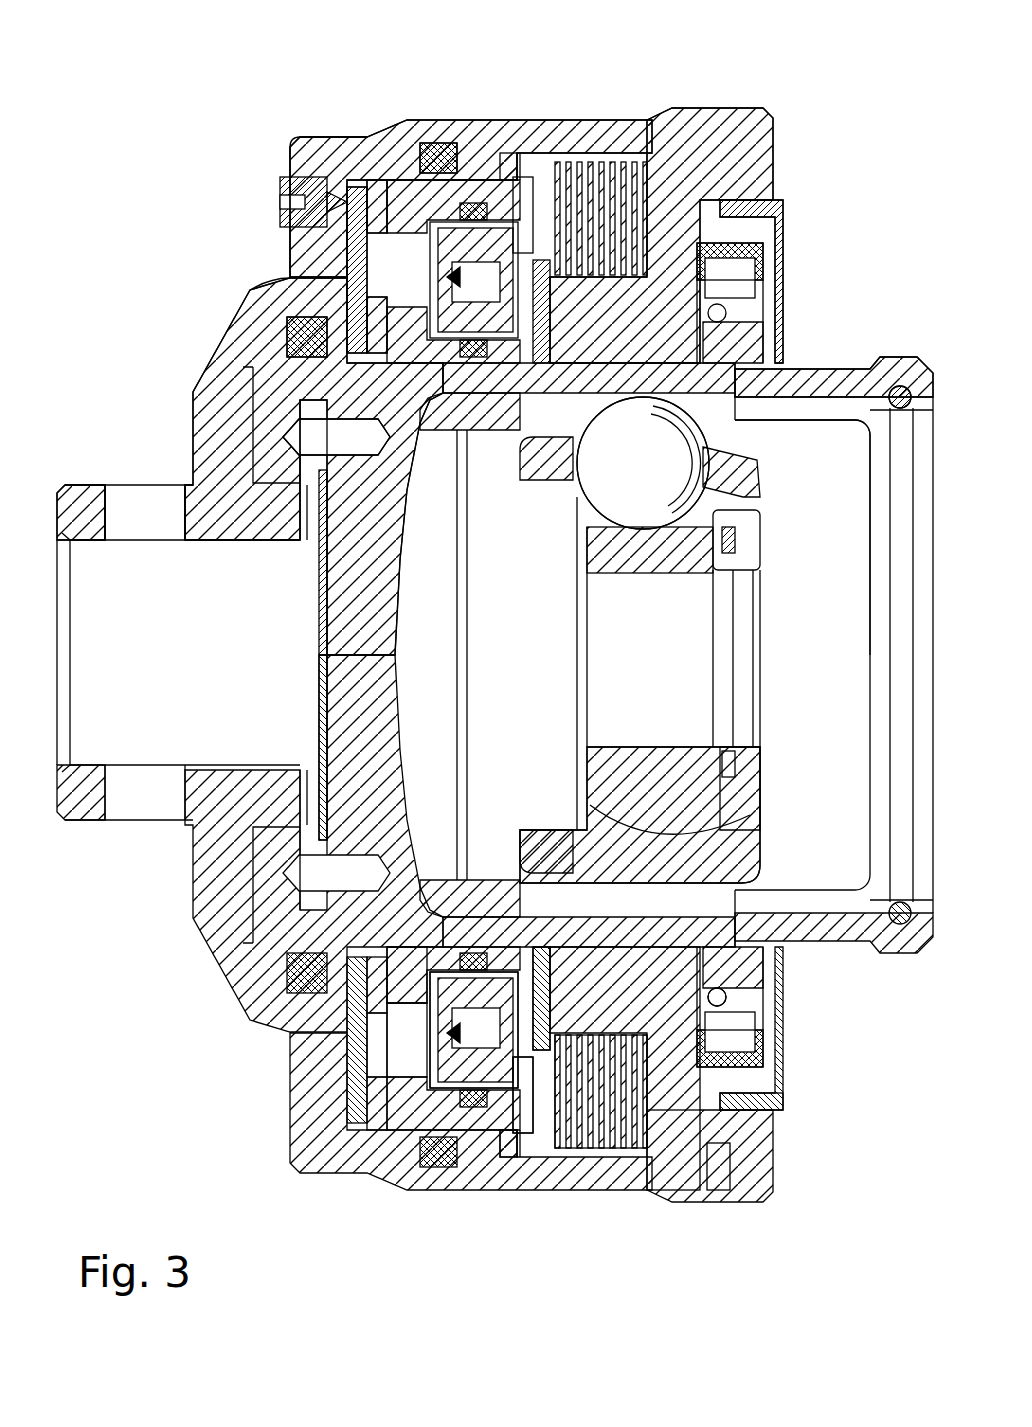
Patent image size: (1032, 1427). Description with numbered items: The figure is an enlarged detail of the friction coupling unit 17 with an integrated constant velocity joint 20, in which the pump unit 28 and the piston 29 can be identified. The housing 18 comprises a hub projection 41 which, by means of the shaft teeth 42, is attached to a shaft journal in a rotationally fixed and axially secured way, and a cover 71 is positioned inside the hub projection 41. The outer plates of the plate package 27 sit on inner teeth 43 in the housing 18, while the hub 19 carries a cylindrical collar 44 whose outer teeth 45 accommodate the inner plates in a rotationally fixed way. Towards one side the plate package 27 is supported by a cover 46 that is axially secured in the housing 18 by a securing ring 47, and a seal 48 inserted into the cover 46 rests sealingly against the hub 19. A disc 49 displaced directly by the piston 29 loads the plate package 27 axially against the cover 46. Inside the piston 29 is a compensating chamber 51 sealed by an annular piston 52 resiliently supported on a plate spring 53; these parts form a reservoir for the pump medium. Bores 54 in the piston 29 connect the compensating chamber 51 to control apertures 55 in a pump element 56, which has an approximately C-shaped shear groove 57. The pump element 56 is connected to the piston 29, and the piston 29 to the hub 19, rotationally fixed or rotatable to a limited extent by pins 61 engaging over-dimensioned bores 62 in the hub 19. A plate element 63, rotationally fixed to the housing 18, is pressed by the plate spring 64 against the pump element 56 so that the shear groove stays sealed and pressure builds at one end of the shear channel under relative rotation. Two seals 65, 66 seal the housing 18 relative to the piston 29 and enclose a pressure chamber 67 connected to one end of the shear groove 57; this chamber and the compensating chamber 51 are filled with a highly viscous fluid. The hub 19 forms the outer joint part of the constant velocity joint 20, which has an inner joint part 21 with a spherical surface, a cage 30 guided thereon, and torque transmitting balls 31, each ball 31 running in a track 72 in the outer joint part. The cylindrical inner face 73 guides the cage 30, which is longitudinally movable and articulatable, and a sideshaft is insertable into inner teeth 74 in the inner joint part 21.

The friction coupling unit 17 is at (600, 112).
The housing 18 is at (693, 120).
The hub 19 is at (803, 437).
The constant velocity joint 20 is at (807, 267).
The inner joint part 21 is at (740, 797).
The plate package 27 is at (600, 1153).
The pump unit 28 is at (500, 105).
The piston 29 is at (427, 1107).
The cage 30 is at (730, 843).
The torque transmitting ball 31 is at (619, 468).
The hub projection 41 is at (83, 507).
The shaft teeth 42 is at (157, 547).
The inner teeth 43 is at (550, 1150).
The cylindrical collar 44 is at (595, 1003).
The outer teeth 45 is at (653, 1057).
The cover 46 is at (673, 1117).
The securing ring 47 is at (717, 1190).
The seal 48 is at (763, 983).
The disc 49 is at (533, 1120).
The compensating chamber 51 is at (427, 1017).
The annular piston 52 is at (470, 1067).
The plate spring 53 is at (527, 1093).
The bores 54 is at (407, 1047).
The control apertures 55 is at (363, 263).
The pump element 56 is at (373, 217).
The shear groove 57 is at (380, 253).
The pins 61 is at (313, 440).
The over-dimensioned bores 62 is at (253, 380).
The plate element 63 is at (313, 153).
The plate spring 64 is at (343, 287).
The seal 65 is at (437, 147).
The seal 66 is at (290, 327).
The pressure chamber 67 is at (377, 190).
The cover 71 is at (317, 687).
The track 72 is at (900, 393).
The cylindrical inner face 73 is at (850, 410).
The inner teeth 74 is at (668, 745).